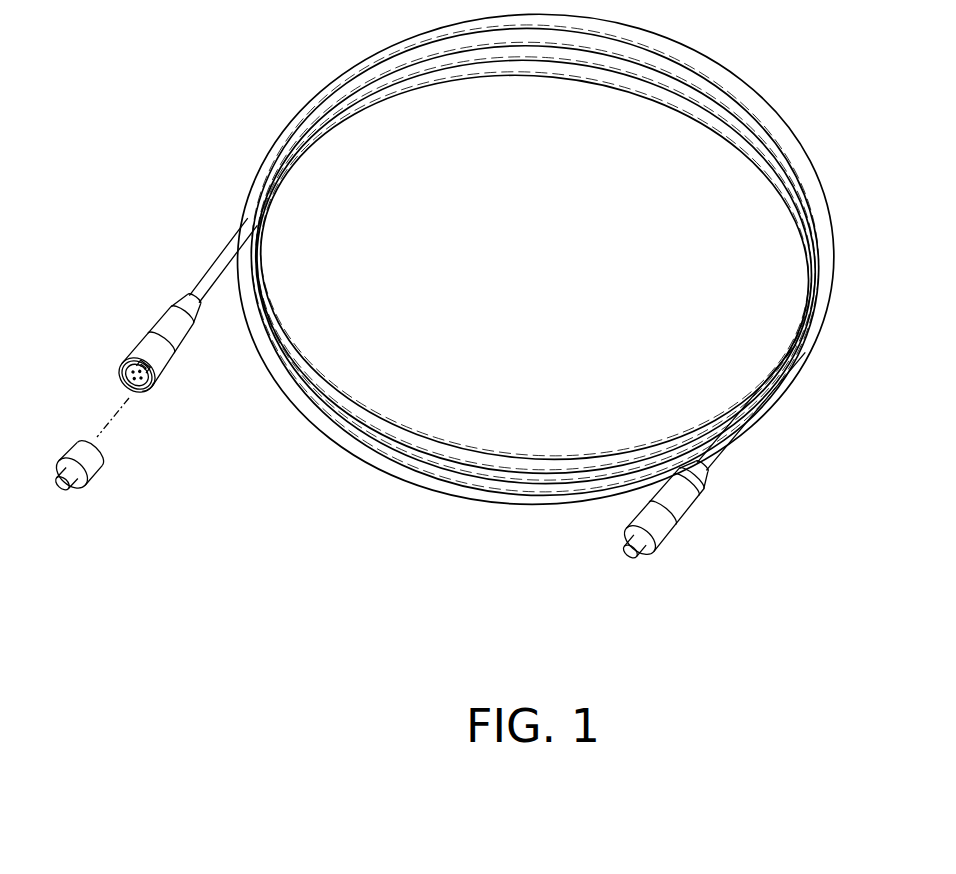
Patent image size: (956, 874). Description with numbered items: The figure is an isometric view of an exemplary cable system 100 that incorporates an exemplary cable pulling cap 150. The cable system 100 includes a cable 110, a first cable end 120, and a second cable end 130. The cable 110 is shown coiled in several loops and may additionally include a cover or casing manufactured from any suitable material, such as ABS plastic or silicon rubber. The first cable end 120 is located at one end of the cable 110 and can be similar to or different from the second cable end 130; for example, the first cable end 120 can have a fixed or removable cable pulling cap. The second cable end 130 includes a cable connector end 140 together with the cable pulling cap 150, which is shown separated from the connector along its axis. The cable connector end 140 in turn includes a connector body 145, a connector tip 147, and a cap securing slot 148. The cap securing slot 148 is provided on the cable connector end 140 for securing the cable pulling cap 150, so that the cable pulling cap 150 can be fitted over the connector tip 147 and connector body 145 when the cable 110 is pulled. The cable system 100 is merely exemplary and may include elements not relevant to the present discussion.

The cable system 100 is at (536, 285).
The cable 110 is at (453, 486).
The first cable end 120 is at (685, 514).
The second cable end 130 is at (124, 377).
The cable connector end 140 is at (131, 352).
The connector body 145 is at (167, 363).
The connector tip 147 is at (155, 386).
The cap securing slot 148 is at (155, 347).
The cable pulling cap 150 is at (97, 472).